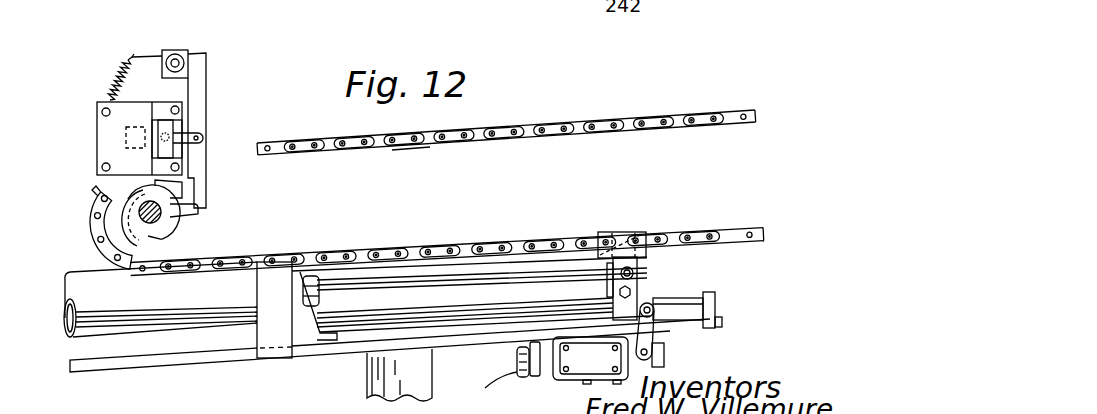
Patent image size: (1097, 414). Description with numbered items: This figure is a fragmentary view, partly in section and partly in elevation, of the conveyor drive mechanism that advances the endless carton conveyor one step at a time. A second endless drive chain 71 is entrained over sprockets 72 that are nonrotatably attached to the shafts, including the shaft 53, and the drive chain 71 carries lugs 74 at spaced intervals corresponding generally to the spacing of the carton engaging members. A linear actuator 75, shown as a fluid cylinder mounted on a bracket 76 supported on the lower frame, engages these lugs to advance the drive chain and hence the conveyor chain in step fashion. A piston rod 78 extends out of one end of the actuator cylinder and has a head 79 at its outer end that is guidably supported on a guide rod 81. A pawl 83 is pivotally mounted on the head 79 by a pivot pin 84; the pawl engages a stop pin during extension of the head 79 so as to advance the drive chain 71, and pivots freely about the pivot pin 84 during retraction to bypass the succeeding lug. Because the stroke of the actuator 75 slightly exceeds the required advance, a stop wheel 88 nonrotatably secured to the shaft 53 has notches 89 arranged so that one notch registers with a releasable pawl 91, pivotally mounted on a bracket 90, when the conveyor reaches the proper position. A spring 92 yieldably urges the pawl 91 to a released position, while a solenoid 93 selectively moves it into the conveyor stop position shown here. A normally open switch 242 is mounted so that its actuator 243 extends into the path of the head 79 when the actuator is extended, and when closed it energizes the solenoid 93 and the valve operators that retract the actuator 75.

The shaft 53 is at (152, 223).
The second endless drive chain 71 is at (405, 145).
The sprockets 72 is at (110, 228).
The lugs 74 is at (130, 268).
The linear actuator 75 is at (117, 328).
The bracket 76 is at (160, 362).
The piston rod 78 is at (490, 275).
The head 79 is at (637, 292).
The guide rod 81 is at (690, 300).
The pawl 83 is at (645, 232).
The pivot pin 84 is at (638, 269).
The stop wheel 88 is at (183, 230).
The notches 89 is at (197, 210).
The bracket 90 is at (180, 50).
The releasable pawl 91 is at (198, 184).
The spring 92 is at (111, 80).
The solenoid 93 is at (107, 143).
The switch 242 is at (602, 369).
The actuator 243 is at (647, 327).